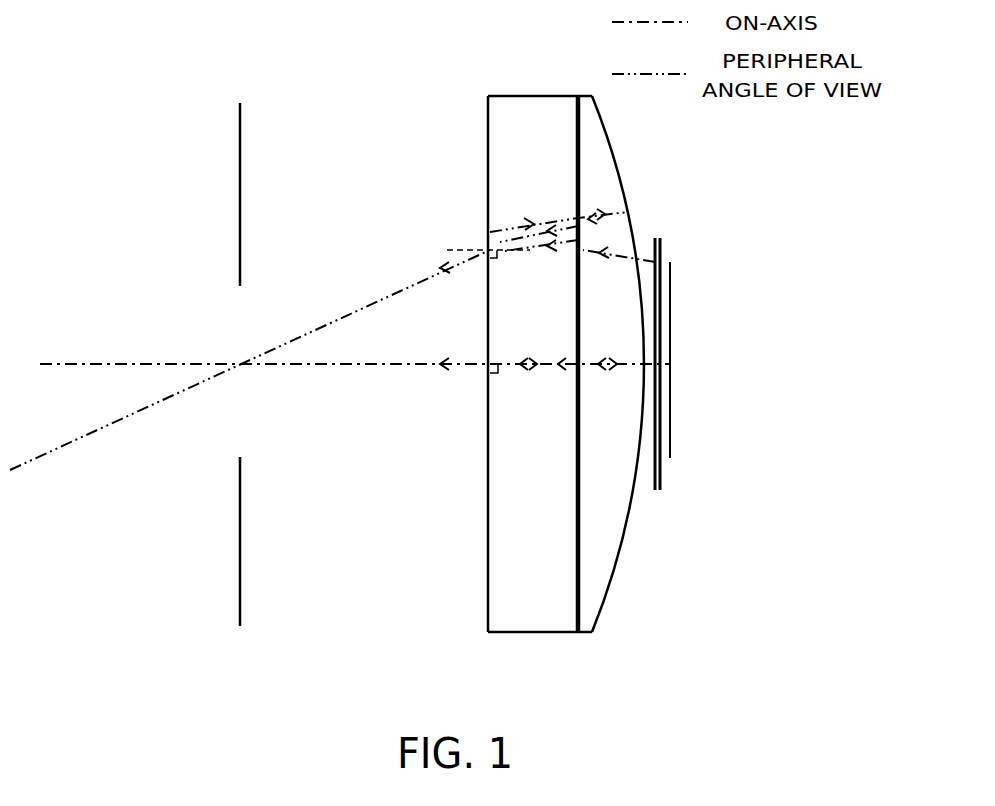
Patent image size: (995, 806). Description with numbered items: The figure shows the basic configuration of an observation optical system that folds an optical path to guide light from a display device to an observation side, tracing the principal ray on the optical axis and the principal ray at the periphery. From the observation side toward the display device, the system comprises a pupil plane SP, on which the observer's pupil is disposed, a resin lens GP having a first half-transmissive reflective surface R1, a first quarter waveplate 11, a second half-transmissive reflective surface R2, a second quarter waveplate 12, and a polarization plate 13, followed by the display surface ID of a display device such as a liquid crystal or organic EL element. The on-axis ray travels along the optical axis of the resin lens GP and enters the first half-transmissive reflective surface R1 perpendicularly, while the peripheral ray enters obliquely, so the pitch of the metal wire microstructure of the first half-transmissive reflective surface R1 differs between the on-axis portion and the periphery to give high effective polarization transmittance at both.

The pupil plane SP is at (240, 102).
The resin lens GP is at (541, 360).
The display surface ID is at (682, 377).
The first quarter waveplate 11 is at (577, 633).
The second quarter waveplate 12 is at (657, 490).
The polarization plate 13 is at (657, 490).
The first half-transmissive reflective surface R1 is at (488, 625).
The second half-transmissive reflective surface R2 is at (598, 620).